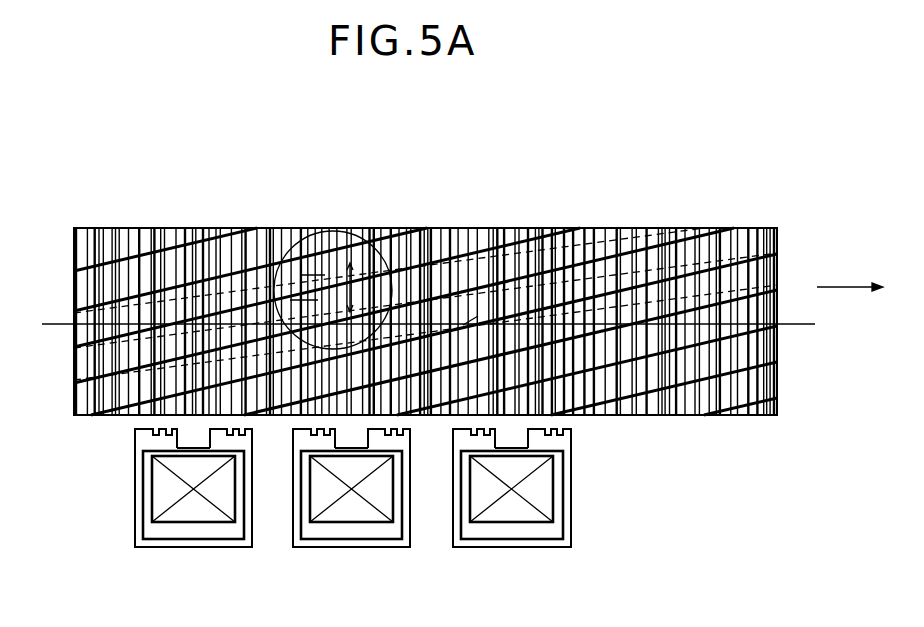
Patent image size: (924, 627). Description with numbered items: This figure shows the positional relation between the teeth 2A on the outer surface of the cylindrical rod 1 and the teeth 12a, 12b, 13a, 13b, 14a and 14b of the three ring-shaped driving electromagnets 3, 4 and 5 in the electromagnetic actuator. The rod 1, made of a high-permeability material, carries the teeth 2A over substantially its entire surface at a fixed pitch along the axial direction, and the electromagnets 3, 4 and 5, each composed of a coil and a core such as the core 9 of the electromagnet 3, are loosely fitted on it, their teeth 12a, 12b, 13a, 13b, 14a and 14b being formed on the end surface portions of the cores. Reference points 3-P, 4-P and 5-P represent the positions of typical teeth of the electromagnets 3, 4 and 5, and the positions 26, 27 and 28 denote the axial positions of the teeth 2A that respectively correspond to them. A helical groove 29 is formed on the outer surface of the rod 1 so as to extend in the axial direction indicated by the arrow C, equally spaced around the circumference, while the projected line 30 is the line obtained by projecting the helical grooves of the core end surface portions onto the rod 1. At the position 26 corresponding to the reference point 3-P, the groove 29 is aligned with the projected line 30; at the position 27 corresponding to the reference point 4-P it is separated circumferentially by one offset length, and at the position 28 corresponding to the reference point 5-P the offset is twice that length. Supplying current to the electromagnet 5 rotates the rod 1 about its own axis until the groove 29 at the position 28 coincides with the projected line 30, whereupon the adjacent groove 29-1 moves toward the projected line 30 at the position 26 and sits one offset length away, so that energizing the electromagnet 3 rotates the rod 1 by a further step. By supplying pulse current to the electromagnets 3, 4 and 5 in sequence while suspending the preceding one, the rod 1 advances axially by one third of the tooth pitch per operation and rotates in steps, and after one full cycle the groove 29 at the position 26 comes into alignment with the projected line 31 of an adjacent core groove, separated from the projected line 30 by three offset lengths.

The rod 1 is at (283, 275).
The teeth 2A is at (768, 230).
The driving electromagnet 3 is at (163, 547).
The driving electromagnet 4 is at (320, 547).
The driving electromagnet 5 is at (532, 547).
The reference point 3-P is at (153, 459).
The reference point 4-P is at (332, 440).
The reference point 5-P is at (497, 440).
The core 9 is at (138, 524).
The tooth 12a is at (137, 441).
The tooth 12b is at (227, 447).
The tooth 13a is at (305, 445).
The tooth 13b is at (398, 442).
The tooth 14a is at (480, 440).
The tooth 14b is at (563, 440).
The axial position of tooth 26 is at (175, 322).
The axial position of tooth 27 is at (265, 280).
The axial position of tooth 28 is at (537, 262).
The helical groove 29 is at (425, 230).
The helical groove 29-1 is at (333, 230).
The projected line 30 is at (460, 230).
The projected line 31 is at (612, 228).
The arrow C is at (850, 272).